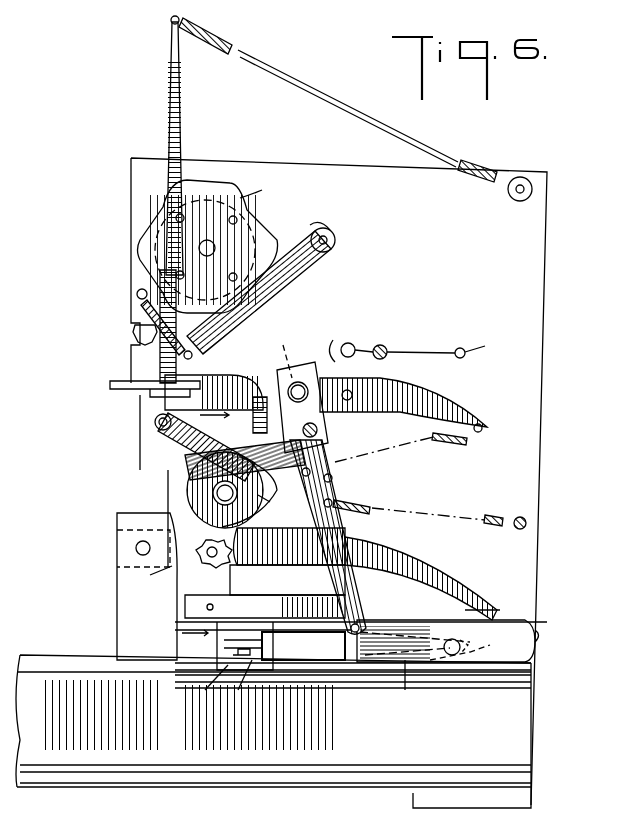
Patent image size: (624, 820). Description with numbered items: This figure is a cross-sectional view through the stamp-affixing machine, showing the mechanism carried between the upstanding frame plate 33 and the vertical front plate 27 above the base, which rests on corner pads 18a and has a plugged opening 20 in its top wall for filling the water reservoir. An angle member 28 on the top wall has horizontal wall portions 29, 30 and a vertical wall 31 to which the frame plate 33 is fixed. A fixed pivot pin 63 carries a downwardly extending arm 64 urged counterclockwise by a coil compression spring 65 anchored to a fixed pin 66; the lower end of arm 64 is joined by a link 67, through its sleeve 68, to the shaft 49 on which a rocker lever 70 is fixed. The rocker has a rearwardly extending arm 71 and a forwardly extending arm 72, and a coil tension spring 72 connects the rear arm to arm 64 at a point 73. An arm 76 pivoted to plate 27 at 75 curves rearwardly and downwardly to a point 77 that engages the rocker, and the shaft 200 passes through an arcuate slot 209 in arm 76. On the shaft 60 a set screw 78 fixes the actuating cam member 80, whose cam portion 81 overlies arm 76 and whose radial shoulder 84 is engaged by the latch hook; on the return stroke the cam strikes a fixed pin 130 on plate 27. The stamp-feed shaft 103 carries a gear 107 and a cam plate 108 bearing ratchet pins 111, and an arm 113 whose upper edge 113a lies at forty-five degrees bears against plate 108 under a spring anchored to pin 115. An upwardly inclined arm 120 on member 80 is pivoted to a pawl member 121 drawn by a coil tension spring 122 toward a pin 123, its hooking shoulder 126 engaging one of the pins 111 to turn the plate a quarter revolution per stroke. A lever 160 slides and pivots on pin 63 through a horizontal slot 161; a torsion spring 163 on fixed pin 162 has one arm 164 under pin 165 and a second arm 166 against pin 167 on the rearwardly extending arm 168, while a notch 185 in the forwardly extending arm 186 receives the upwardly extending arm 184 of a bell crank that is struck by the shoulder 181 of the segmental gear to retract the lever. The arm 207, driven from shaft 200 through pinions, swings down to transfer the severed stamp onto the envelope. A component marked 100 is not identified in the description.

The corner pads 18a is at (533, 806).
The plugged opening 20 is at (227, 646).
The vertical front plate 27 is at (117, 632).
The angle member 28 is at (270, 653).
The horizontal wall portion 29 is at (237, 683).
The horizontal wall portion 30 is at (208, 686).
The vertical wall 31 is at (312, 645).
The frame plate 33 is at (532, 316).
The shaft 49 is at (458, 660).
The shaft 60 is at (213, 491).
The fixed pivot pin 63 is at (300, 380).
The arm 64 is at (328, 483).
The coil compression spring 65 is at (382, 500).
The fixed pin 66 is at (527, 522).
The link 67 is at (406, 683).
The sleeve 68 is at (485, 650).
The rocker lever 70 is at (500, 612).
The rearwardly extending arm 71 is at (540, 630).
The forwardly extending arm 72 is at (420, 612).
The point 73 is at (345, 530).
The pivot 75 is at (136, 548).
The arm 76 is at (292, 530).
The point 77 is at (470, 612).
The set screw 78 is at (205, 499).
The actuating cam member 80 is at (282, 502).
The cam portion 81 is at (175, 521).
The radial shoulder 84 is at (222, 455).
The housing 100 is at (161, 570).
The shaft 103 is at (209, 250).
The gear 107 is at (266, 185).
The cam plate 108 is at (212, 185).
The ratchet pins 111 is at (245, 205).
The arm 113 is at (340, 255).
The upper edge 113a is at (325, 230).
The pin 115 is at (137, 295).
The upwardly inclined arm 120 is at (160, 445).
The pawl member 121 is at (145, 122).
The coil tension spring 122 is at (268, 62).
The pin 123 is at (525, 178).
The hooking shoulder 126 is at (184, 218).
The fixed pin 130 is at (261, 494).
The lever 160 is at (421, 389).
The horizontal slot 161 is at (279, 351).
The fixed pin 162 is at (356, 346).
The torsion spring 163 is at (394, 345).
The spring arm 164 is at (440, 352).
The pin 165 is at (468, 349).
The second spring arm 166 is at (345, 345).
The pin 167 is at (352, 400).
The rearwardly extending arm 168 is at (428, 407).
The shoulder 181 is at (291, 495).
The upwardly extending arm 184 is at (255, 395).
The notch 185 is at (262, 395).
The forwardly extending arm 186 is at (140, 396).
The shaft 200 is at (212, 565).
The arm 207 is at (270, 798).
The arcuate slot 209 is at (225, 575).